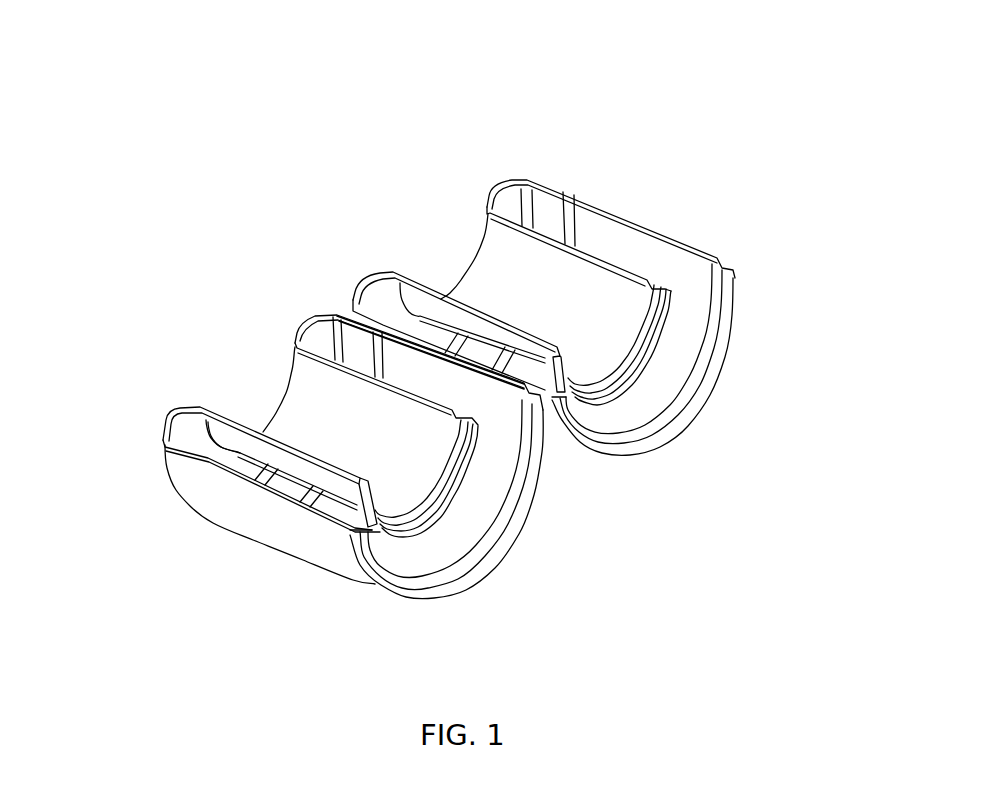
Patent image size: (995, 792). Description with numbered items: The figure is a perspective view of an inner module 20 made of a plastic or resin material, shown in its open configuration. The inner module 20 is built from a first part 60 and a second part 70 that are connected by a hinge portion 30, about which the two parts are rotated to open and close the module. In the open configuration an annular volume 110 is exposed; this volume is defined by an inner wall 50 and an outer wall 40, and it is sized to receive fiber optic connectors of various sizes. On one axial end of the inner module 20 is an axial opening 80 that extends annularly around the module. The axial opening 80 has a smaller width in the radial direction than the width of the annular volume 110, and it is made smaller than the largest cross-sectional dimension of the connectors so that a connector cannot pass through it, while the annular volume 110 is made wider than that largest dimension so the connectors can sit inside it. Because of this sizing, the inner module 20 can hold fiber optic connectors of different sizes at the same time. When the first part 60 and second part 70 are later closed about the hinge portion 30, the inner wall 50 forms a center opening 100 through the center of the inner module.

The inner module 20 is at (228, 196).
The hinge portion 30 is at (408, 332).
The outer wall 40 is at (537, 183).
The inner wall 50 is at (547, 233).
The first part 60 is at (262, 513).
The second part 70 is at (620, 428).
The axial opening 80 is at (663, 352).
The center opening 100 is at (503, 301).
The annular volume 110 is at (242, 438).